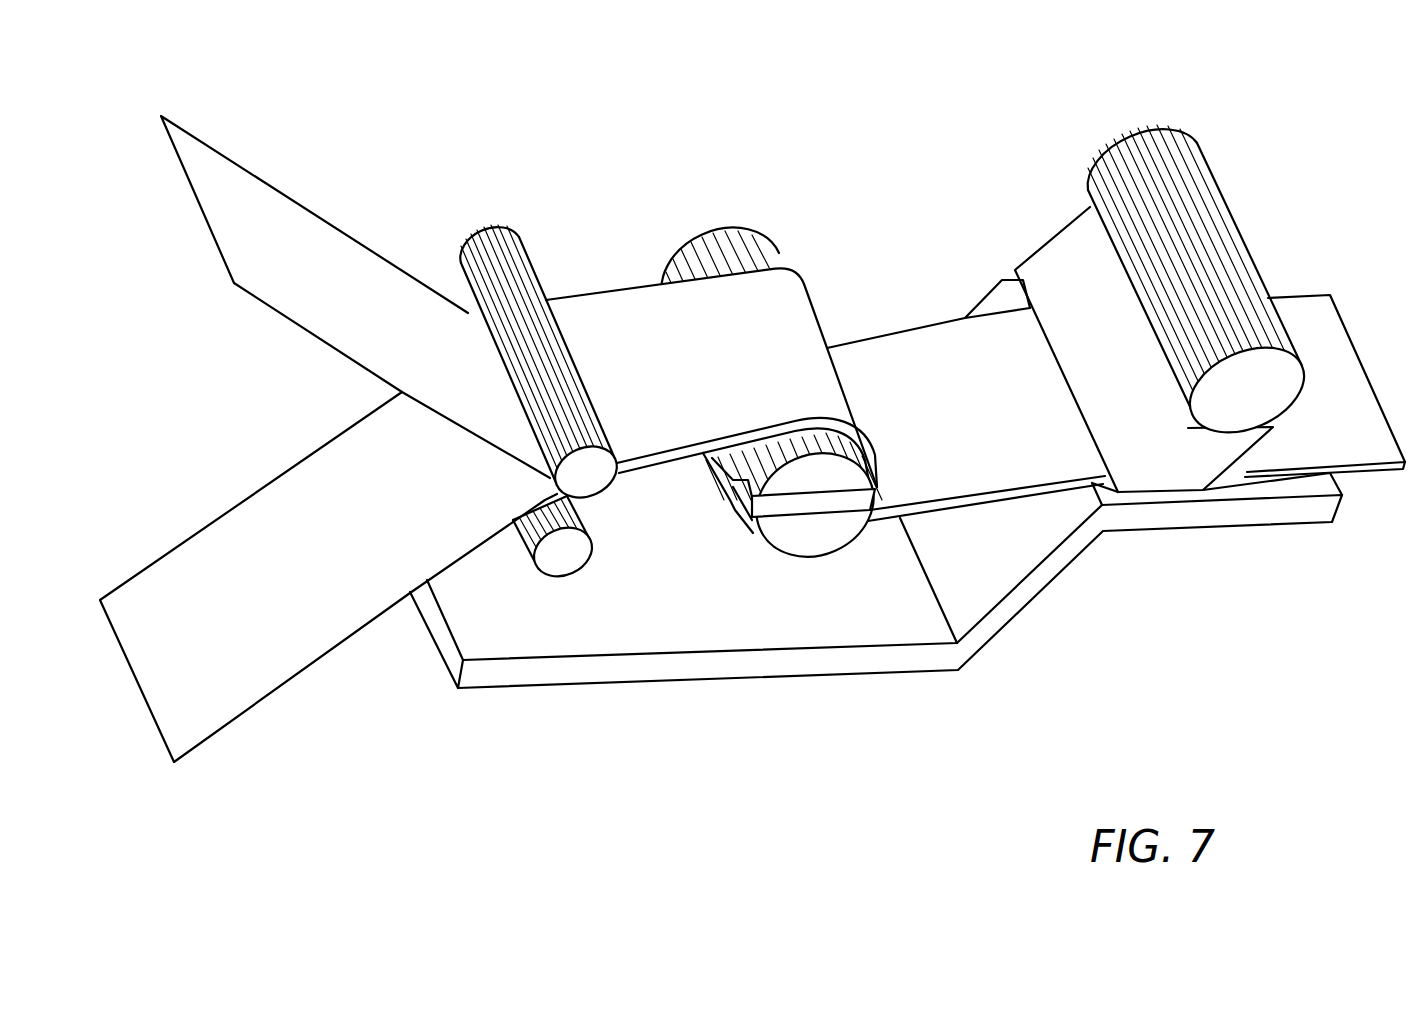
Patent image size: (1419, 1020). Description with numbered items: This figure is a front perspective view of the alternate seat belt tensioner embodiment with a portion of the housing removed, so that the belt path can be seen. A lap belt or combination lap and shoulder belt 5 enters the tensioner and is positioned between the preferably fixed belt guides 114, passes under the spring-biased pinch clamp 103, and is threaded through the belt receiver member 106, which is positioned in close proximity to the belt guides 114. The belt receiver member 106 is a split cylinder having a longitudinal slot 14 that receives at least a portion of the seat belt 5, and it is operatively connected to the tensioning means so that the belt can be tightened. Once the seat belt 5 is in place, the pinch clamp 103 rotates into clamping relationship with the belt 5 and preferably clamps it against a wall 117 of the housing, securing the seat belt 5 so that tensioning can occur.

The seat belt 5 is at (283, 318).
The longitudinal slot 14 is at (877, 502).
The pinch clamp 103 is at (1217, 178).
The belt receiver member 106 is at (813, 543).
The belt guides 114 is at (541, 254).
The wall 117 is at (1243, 528).